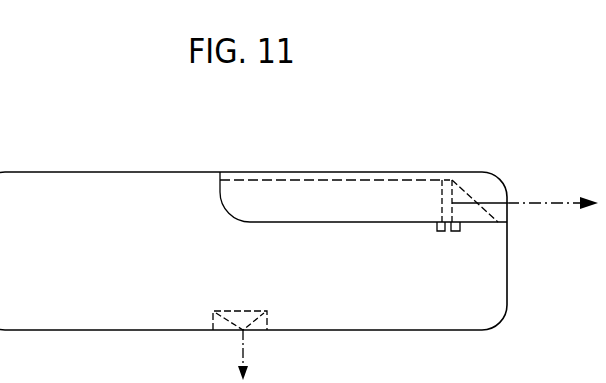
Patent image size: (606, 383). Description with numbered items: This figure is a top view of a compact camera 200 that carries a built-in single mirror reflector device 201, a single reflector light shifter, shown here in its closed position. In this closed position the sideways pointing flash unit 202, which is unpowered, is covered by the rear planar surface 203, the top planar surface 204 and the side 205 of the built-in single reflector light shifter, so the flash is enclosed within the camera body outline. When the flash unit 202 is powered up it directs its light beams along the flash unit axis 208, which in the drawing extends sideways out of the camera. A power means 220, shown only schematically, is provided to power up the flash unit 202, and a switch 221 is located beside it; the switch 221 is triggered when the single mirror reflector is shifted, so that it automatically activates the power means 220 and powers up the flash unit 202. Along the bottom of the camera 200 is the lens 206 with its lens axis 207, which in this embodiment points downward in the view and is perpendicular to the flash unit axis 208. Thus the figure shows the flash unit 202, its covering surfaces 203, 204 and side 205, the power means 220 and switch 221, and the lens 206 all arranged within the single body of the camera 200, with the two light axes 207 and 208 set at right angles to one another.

The camera 200 is at (112, 172).
The single mirror reflector device 201 is at (288, 167).
The flash unit 202 is at (442, 181).
The rear planar surface 203 is at (371, 172).
The top planar surface 204 is at (317, 213).
The side 205 is at (506, 192).
The lens 206 is at (240, 331).
The lens axis 207 is at (245, 366).
The flash unit axis 208 is at (560, 206).
The power means 220 is at (441, 231).
The switch 221 is at (457, 227).